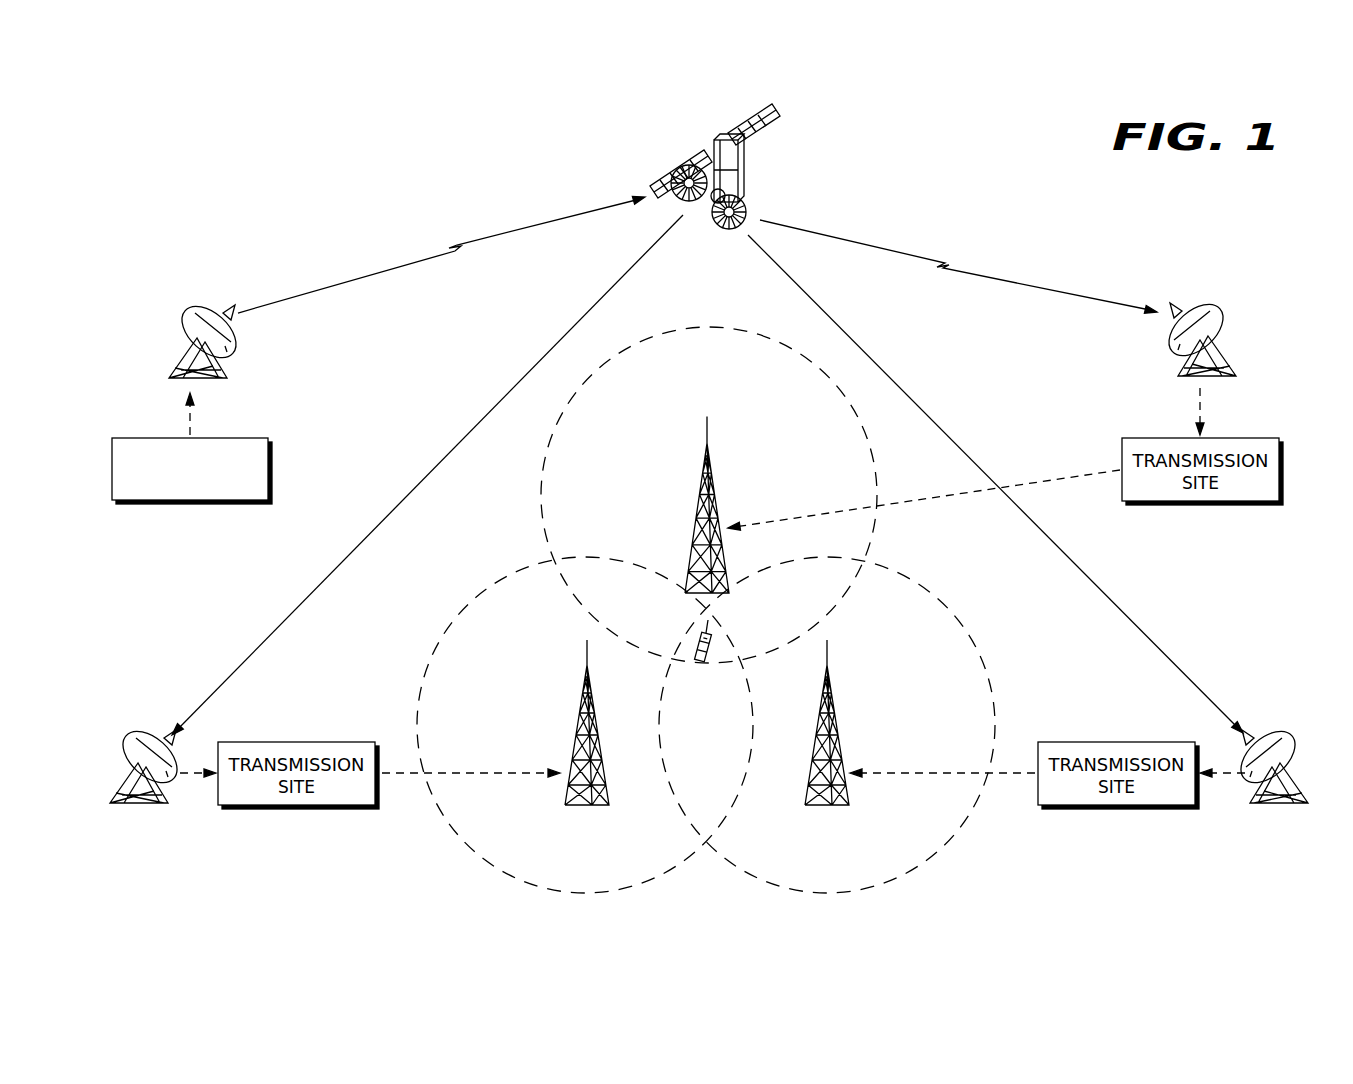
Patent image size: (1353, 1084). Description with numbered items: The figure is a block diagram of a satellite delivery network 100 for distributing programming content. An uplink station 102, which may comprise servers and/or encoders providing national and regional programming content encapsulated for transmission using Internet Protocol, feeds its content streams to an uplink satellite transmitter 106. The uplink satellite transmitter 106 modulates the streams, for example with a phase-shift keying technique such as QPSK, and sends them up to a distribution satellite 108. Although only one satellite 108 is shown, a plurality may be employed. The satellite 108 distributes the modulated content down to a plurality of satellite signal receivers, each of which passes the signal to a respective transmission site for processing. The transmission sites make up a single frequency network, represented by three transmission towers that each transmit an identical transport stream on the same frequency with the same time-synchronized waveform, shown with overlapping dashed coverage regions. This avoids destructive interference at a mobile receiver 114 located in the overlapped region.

The satellite delivery network 100 is at (1061, 168).
The uplink station 102 is at (188, 503).
The uplink satellite transmitter 106 is at (195, 309).
The distribution satellite 108 is at (690, 166).
The mobile receiver 114 is at (712, 640).